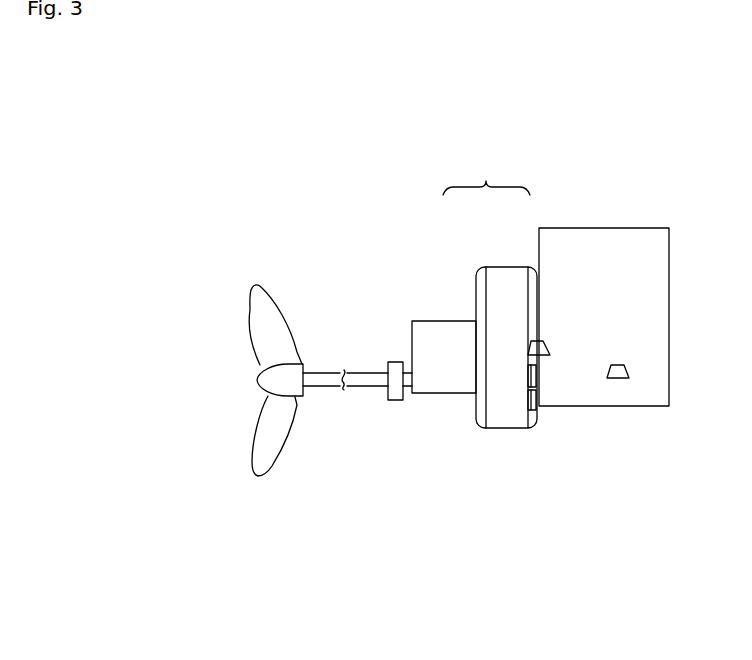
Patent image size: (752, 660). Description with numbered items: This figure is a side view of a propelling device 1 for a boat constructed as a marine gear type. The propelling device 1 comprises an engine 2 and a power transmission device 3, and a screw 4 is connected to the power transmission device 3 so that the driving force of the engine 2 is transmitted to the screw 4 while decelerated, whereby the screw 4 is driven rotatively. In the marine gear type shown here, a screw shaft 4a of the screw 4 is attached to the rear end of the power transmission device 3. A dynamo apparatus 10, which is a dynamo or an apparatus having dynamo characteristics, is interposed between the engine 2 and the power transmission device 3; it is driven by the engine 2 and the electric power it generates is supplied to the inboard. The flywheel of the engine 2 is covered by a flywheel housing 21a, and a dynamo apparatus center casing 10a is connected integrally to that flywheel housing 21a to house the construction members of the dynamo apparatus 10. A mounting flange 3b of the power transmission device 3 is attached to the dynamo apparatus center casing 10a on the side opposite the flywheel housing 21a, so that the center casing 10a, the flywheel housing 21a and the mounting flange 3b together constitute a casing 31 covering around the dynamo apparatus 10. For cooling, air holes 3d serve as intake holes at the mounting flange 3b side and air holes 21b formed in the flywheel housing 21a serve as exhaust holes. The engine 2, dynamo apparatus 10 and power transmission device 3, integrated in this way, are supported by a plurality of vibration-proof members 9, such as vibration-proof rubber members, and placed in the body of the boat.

The propelling device 1 is at (422, 227).
The engine 2 is at (617, 284).
The power transmission device 3 is at (450, 393).
The mounting flange 3b is at (476, 266).
The air holes 3d is at (476, 302).
The screw 4 is at (252, 455).
The screw shaft 4a is at (322, 370).
The vibration-proof members 9 is at (550, 347).
The dynamo apparatus 10 is at (507, 432).
The dynamo apparatus center casing 10a is at (497, 266).
The flywheel housing 21a is at (528, 266).
The air holes 21b is at (542, 368).
The casing 31 is at (486, 171).